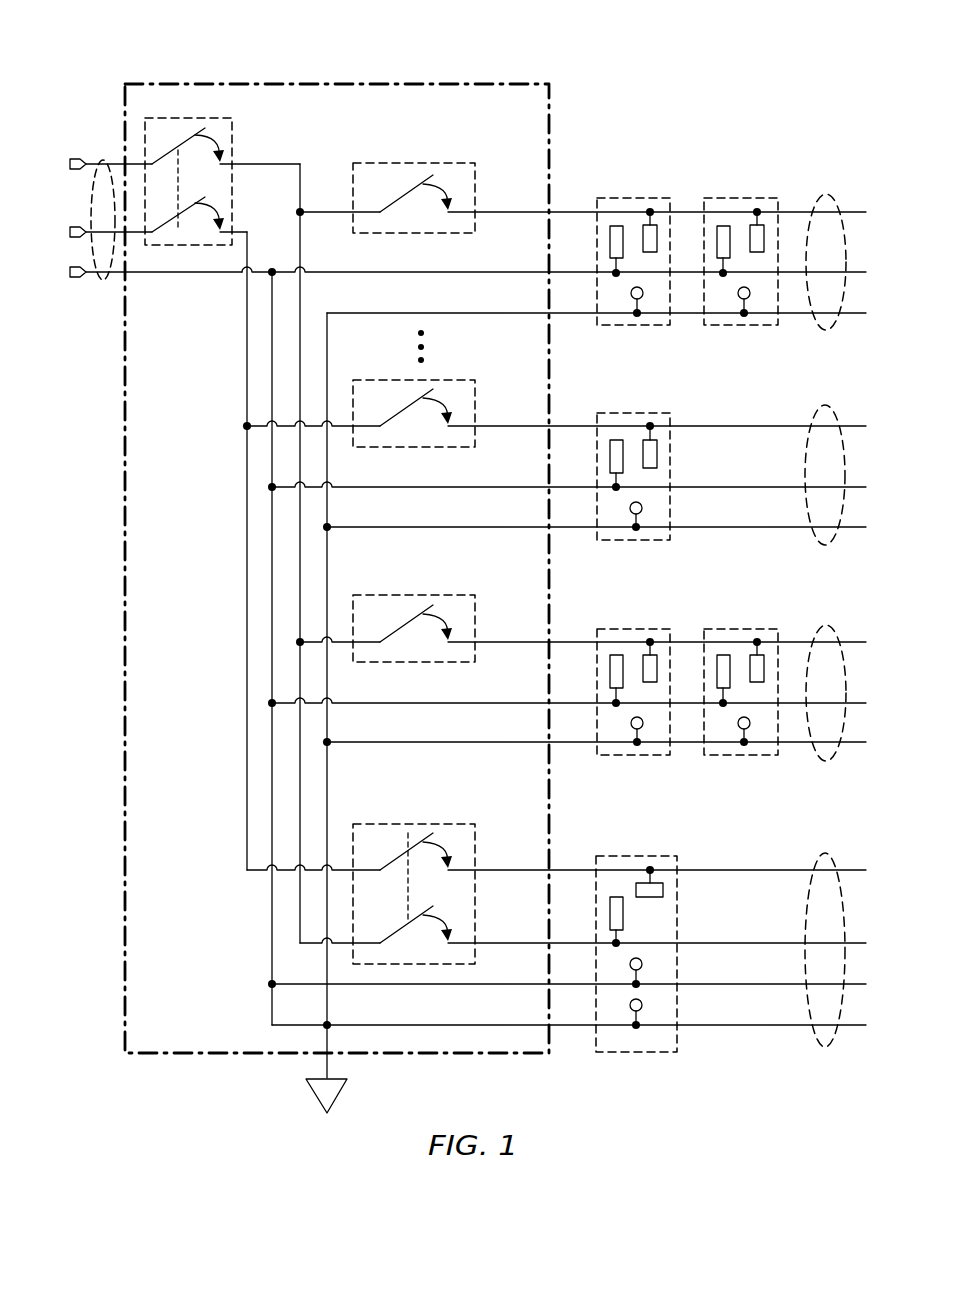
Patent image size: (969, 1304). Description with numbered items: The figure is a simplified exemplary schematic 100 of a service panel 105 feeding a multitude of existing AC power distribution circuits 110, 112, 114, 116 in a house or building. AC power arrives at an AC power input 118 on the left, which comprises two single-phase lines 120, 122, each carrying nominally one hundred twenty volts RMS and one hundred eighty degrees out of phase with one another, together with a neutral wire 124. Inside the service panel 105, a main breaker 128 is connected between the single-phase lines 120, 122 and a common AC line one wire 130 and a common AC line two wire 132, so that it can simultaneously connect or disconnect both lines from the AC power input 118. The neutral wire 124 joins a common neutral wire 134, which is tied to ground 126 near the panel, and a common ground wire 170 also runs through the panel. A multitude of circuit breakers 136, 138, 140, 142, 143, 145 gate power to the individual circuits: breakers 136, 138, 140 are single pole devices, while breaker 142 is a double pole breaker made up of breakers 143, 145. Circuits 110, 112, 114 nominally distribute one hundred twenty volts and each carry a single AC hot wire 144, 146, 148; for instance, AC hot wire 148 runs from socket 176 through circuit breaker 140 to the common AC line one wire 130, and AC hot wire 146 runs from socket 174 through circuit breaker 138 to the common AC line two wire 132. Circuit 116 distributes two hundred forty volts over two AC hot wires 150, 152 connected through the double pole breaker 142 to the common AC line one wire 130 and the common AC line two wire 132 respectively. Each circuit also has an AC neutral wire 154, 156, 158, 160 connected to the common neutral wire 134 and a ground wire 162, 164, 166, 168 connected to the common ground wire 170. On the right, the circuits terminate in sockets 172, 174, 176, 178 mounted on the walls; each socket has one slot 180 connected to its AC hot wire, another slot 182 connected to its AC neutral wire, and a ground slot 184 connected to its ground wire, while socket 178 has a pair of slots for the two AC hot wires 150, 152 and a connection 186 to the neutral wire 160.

The simplified exemplary schematic 100 is at (749, 68).
The service panel 105 is at (124, 492).
The existing AC power distribution circuit 110 is at (826, 194).
The existing AC power distribution circuit 112 is at (825, 405).
The existing AC power distribution circuit 114 is at (826, 625).
The existing AC power distribution circuit 116 is at (825, 853).
The AC power input 118 is at (107, 160).
The single-phase 60 Hz line 120 is at (80, 160).
The single-phase 60 Hz line 122 is at (80, 228).
The neutral wire 124 is at (80, 277).
The ground 126 is at (338, 1090).
The main breaker 128 is at (233, 150).
The common AC line 1 wire 130 is at (292, 162).
The common AC line 2 wire 132 is at (245, 325).
The common neutral wire 134 is at (270, 903).
The circuit breaker 136 is at (466, 163).
The circuit breaker 138 is at (466, 380).
The circuit breaker 140 is at (466, 595).
The circuit breaker 142 is at (441, 873).
The circuit breaker 143 is at (416, 919).
The AC hot wire 144 is at (572, 211).
The circuit breaker 145 is at (416, 846).
The AC hot wire 146 is at (572, 425).
The AC hot wire 148 is at (572, 641).
The AC hot wire 150 is at (572, 869).
The AC hot wire 152 is at (572, 942).
The AC neutral wire 154 is at (572, 271).
The AC neutral wire 156 is at (572, 486).
The AC neutral wire 158 is at (572, 702).
The AC neutral wire 160 is at (772, 983).
The ground wire 162 is at (798, 316).
The ground wire 164 is at (745, 530).
The ground wire 166 is at (688, 745).
The ground wire 168 is at (790, 1026).
The common ground wire 170 is at (329, 322).
The socket 172 is at (648, 327).
The socket 174 is at (648, 542).
The socket 176 is at (650, 706).
The socket 178 is at (661, 974).
The slot 180 is at (658, 666).
The slot 182 is at (624, 668).
The ground slot 184 is at (631, 727).
The connection 186 is at (630, 966).